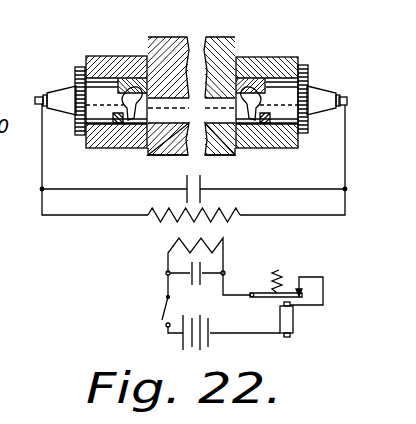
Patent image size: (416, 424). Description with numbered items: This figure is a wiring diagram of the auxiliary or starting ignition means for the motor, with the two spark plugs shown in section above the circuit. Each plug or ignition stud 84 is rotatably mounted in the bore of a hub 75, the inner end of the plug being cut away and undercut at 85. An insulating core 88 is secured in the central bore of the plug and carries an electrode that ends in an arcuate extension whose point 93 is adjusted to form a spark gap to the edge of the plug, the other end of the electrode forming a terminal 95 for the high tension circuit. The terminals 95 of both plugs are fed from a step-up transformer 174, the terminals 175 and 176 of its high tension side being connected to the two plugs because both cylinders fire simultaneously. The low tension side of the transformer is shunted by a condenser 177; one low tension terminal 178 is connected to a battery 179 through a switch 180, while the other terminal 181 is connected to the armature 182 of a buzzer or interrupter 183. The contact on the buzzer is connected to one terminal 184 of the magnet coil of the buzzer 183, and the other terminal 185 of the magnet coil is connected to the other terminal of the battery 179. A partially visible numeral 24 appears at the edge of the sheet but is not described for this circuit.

The hub 75 is at (104, 57).
The ignition stud 84 is at (128, 68).
The undercut 85 is at (150, 149).
The insulating core 88 is at (60, 92).
The point 93 is at (112, 145).
The terminal 95 is at (37, 99).
The step-up transformer 174 is at (163, 229).
The terminal 175 is at (346, 166).
The terminal 176 is at (42, 164).
The condenser 177 is at (177, 278).
The terminal 178 is at (165, 285).
The battery 179 is at (211, 337).
The switch 180 is at (162, 312).
The terminal 181 is at (224, 283).
The armature 182 is at (282, 290).
The buzzer 183 is at (295, 319).
The terminal 184 is at (325, 293).
The terminal 185 is at (270, 334).
The conductor 24 is at (11, 189).